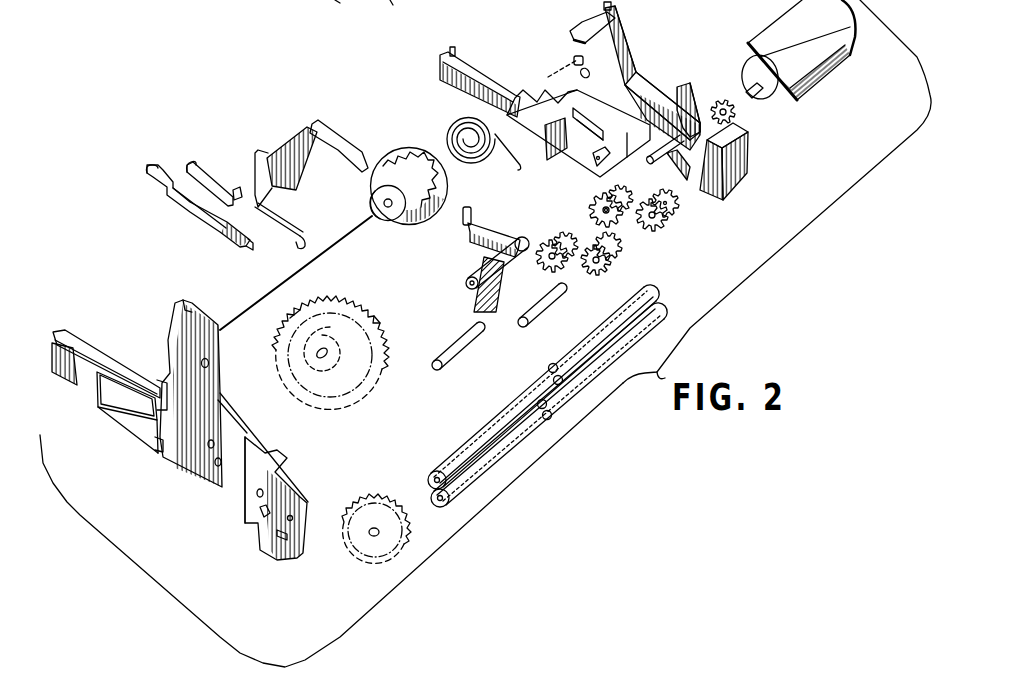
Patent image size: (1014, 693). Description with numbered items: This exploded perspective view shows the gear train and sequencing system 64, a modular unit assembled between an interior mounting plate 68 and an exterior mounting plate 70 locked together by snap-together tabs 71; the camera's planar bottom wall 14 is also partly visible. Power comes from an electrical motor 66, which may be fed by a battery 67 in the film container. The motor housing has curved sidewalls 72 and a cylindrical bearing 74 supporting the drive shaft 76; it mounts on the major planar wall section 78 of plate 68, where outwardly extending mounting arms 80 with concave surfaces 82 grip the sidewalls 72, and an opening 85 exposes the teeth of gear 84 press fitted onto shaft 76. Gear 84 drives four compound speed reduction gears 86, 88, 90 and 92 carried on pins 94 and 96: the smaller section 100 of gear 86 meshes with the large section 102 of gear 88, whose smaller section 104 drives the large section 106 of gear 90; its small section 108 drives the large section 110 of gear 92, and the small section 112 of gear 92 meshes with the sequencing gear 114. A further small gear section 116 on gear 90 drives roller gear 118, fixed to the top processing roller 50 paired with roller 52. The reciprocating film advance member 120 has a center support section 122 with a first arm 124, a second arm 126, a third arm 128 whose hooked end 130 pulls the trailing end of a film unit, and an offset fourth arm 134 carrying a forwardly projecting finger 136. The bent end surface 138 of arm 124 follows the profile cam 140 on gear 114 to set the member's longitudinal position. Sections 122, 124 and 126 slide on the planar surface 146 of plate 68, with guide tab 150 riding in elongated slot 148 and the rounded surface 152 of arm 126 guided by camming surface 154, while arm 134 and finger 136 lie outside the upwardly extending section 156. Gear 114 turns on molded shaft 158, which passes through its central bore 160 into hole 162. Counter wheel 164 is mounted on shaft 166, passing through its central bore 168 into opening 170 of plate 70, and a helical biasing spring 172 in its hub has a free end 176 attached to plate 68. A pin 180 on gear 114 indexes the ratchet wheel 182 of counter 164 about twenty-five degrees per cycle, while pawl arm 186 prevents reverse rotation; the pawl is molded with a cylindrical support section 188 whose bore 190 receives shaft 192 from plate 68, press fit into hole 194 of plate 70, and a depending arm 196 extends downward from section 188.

The planar bottom wall 14 is at (405, 11).
The electrical battery 67 is at (333, 5).
The top roller 50 is at (472, 437).
The processing roller 52 is at (477, 477).
The gear train and sequencing system 64 is at (665, 378).
The electrical motor 66 is at (850, 67).
The interior mounting plate 68 is at (650, 80).
The exterior mounting plate 70 is at (167, 335).
The snap-together tabs 71 is at (590, 25).
The curved sidewalls 72 is at (817, 83).
The cylindrical bearing 74 is at (742, 70).
The motor drive shaft 76 is at (761, 87).
The major planar wall section 78 is at (632, 52).
The motor mounting arms 80 is at (683, 90).
The interior concave surfaces 82 is at (696, 105).
The gear 84 is at (737, 118).
The opening 85 is at (721, 190).
The compound speed reduction gear 86 is at (676, 222).
The compound speed reduction gear 88 is at (592, 201).
The compound speed reduction gear 90 is at (660, 262).
The compound speed reduction gear 92 is at (472, 212).
The shaft or pin 94 is at (547, 305).
The shaft or pin 96 is at (457, 353).
The smaller diameter section 100 is at (658, 232).
The large diameter section 102 is at (603, 190).
The smaller diameter section 104 is at (596, 212).
The large diameter section 106 is at (613, 252).
The small diameter section 108 is at (602, 270).
The large diameter section 110 is at (548, 219).
The small diameter section 112 is at (543, 272).
The sequencing gear 114 is at (360, 313).
The small diameter gear section 116 is at (582, 270).
The roller gear 118 is at (370, 510).
The film advance member 120 is at (253, 232).
The center support section 122 is at (235, 190).
The first arm 124 is at (267, 208).
The second arm 126 is at (200, 177).
The third arm 128 is at (173, 205).
The hooked end 130 is at (147, 172).
The fourth arm 134 is at (287, 150).
The forwardly projecting finger 136 is at (347, 143).
The end surface 138 is at (302, 250).
The profile cam 140 is at (288, 385).
The planar surface 146 is at (560, 77).
The longitudinal elongated slot 148 is at (578, 133).
The guide tab 150 is at (367, 218).
The rounded surface 152 is at (193, 163).
The longitudinal camming surface 154 is at (467, 60).
The upwardly extending section 156 is at (626, 27).
The shaft 158 is at (607, 152).
The central bore 160 is at (322, 353).
The receiving hole 162 is at (205, 452).
The counter wheel 164 is at (423, 148).
The shaft 166 is at (577, 58).
The central bore 168 is at (377, 193).
The opening 170 is at (201, 363).
The helical biasing spring 172 is at (463, 113).
The free end 176 is at (520, 165).
The pin 180 is at (283, 320).
The ratchet wheel 182 is at (402, 229).
The pawl arm 186 is at (477, 245).
The transverse cylindrical support section 188 is at (483, 265).
The open bore 190 is at (468, 283).
The shaft 192 is at (652, 112).
The receiving hole 194 is at (212, 470).
The depending arm 196 is at (480, 308).